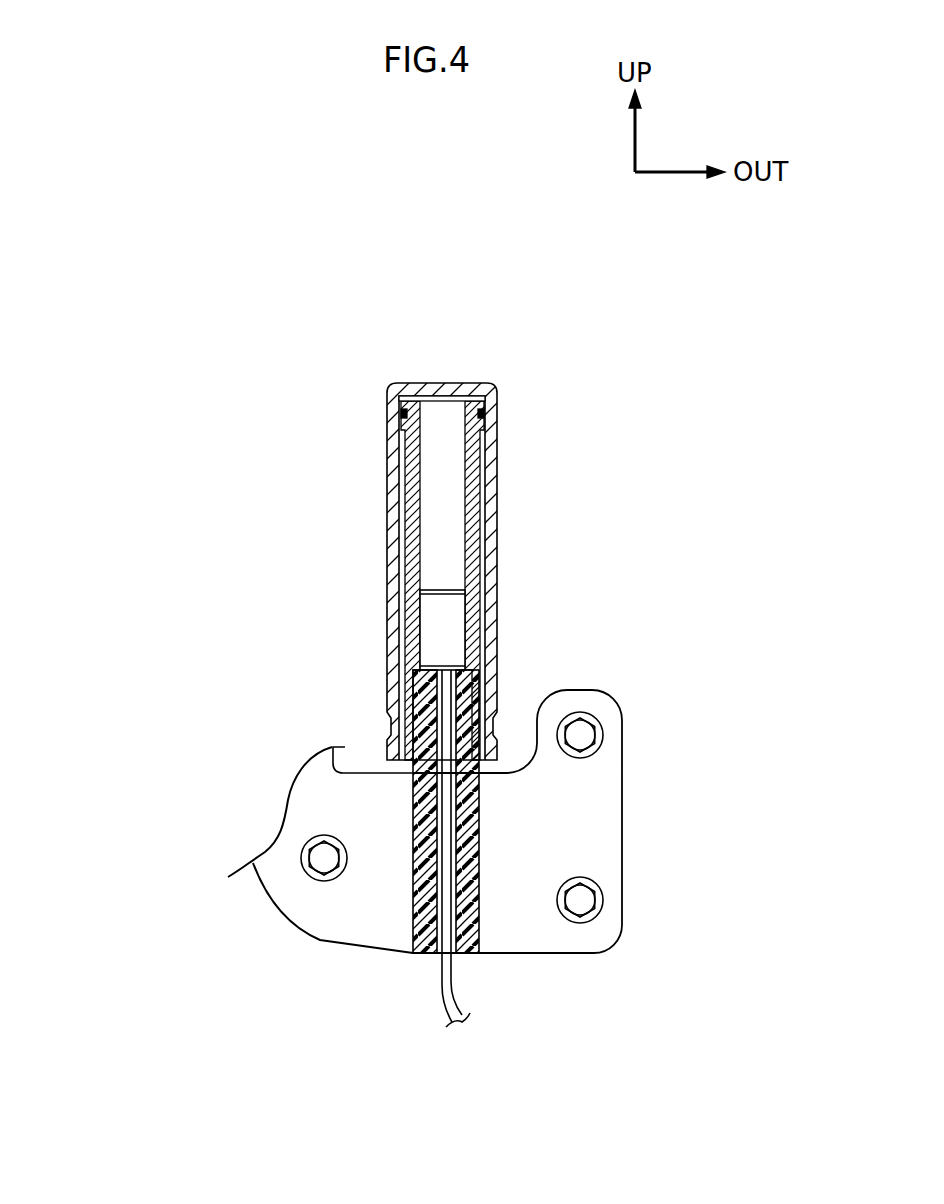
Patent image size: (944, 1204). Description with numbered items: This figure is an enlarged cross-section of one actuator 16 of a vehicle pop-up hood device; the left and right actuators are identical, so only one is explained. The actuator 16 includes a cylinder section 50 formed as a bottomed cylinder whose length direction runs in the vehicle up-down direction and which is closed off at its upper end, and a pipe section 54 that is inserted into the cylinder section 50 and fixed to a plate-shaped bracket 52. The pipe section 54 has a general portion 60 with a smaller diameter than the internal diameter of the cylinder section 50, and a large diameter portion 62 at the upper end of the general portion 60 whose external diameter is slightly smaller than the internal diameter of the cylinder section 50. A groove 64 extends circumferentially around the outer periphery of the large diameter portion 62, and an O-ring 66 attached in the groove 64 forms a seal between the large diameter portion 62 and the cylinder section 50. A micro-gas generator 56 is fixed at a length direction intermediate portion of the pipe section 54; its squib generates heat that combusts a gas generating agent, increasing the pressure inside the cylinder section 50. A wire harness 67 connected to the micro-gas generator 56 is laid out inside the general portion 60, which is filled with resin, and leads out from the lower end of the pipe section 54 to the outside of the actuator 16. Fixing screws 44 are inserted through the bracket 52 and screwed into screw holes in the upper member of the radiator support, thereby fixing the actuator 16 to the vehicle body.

The actuator 16 is at (197, 367).
The fixing screws 44 is at (598, 720).
The cylinder section 50 is at (389, 388).
The bracket 52 is at (623, 778).
The pipe section 54 is at (446, 811).
The micro-gas generator 56 is at (455, 628).
The general portion 60 is at (482, 808).
The large diameter portion 62 is at (472, 396).
The groove 64 is at (486, 412).
The O-ring 66 is at (400, 412).
The wire harness 67 is at (460, 997).